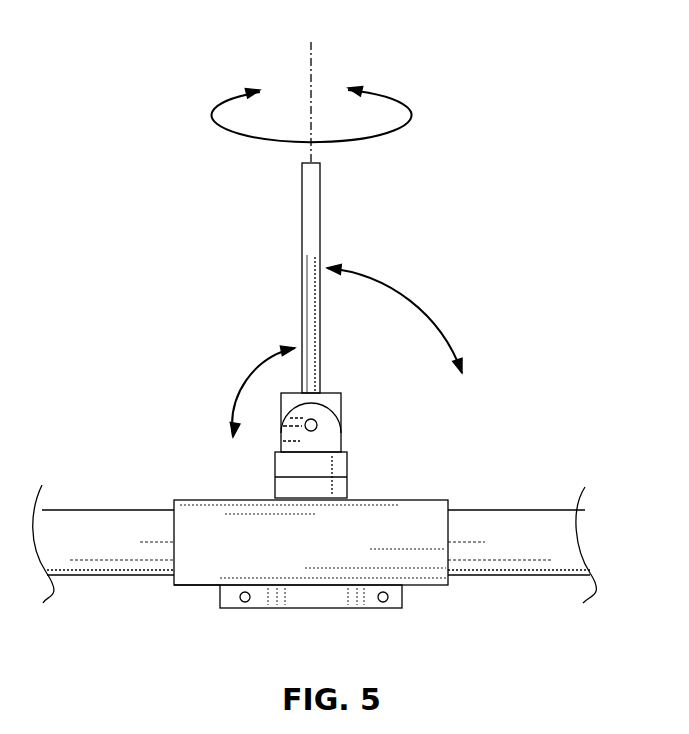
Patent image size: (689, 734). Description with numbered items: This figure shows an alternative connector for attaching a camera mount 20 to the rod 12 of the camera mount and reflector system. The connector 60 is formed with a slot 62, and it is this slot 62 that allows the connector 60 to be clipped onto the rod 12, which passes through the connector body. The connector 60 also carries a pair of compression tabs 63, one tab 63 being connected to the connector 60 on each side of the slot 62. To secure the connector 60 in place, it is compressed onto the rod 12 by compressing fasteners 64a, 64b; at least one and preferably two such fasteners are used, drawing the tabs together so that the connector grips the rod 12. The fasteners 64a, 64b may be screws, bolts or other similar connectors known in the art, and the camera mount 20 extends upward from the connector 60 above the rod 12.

The camera mount 20 is at (374, 192).
The connector 60 is at (412, 498).
The rod 12 is at (70, 576).
The slot 62 is at (190, 589).
The compression tab 63 is at (233, 610).
The compressing fastener 64a is at (252, 598).
The compressing fastener 64b is at (378, 598).